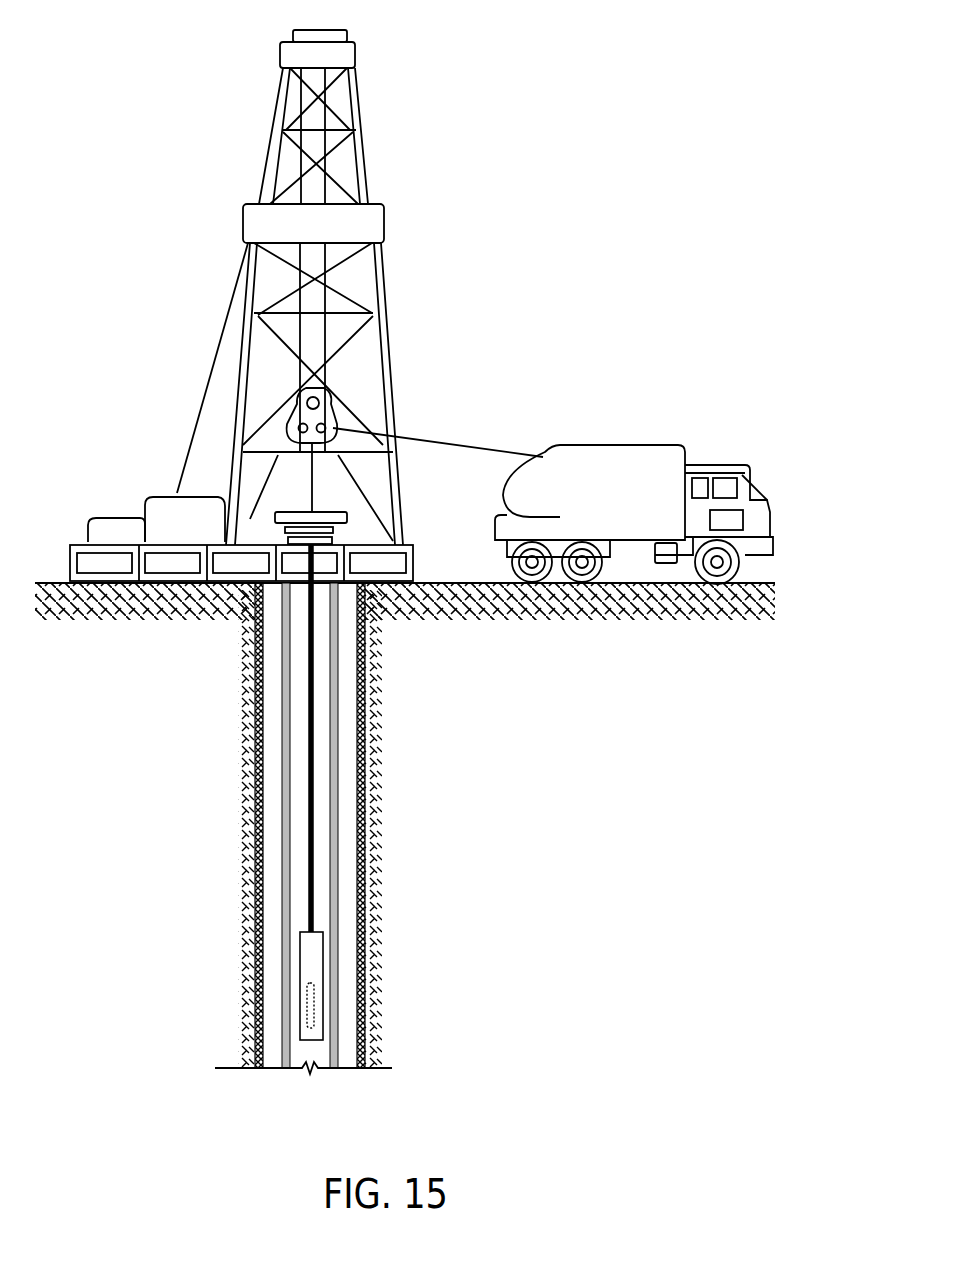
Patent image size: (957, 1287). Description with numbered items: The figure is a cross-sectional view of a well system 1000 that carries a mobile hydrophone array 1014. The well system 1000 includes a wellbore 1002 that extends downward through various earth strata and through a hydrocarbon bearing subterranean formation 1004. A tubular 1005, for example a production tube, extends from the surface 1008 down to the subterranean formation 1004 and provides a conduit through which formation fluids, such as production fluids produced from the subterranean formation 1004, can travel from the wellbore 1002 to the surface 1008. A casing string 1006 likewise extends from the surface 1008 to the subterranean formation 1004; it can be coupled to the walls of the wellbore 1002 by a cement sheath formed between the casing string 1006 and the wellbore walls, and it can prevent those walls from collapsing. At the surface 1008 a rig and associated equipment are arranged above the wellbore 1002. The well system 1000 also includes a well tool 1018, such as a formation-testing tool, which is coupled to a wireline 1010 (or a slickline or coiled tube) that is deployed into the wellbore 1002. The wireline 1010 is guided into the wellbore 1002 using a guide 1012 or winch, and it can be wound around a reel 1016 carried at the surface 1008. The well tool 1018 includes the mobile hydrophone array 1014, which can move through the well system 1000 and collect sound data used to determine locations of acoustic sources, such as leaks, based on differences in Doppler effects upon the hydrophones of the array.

The well system 1000 is at (578, 228).
The wellbore 1002 is at (365, 798).
The subterranean formation 1004 is at (377, 1045).
The tubular 1005 is at (282, 790).
The casing string 1006 is at (244, 844).
The surface 1008 is at (347, 507).
The wireline 1010 is at (432, 435).
The guide 1012 is at (333, 392).
The mobile hydrophone array 1014 is at (315, 1005).
The reel 1016 is at (543, 462).
The well tool 1018 is at (322, 970).